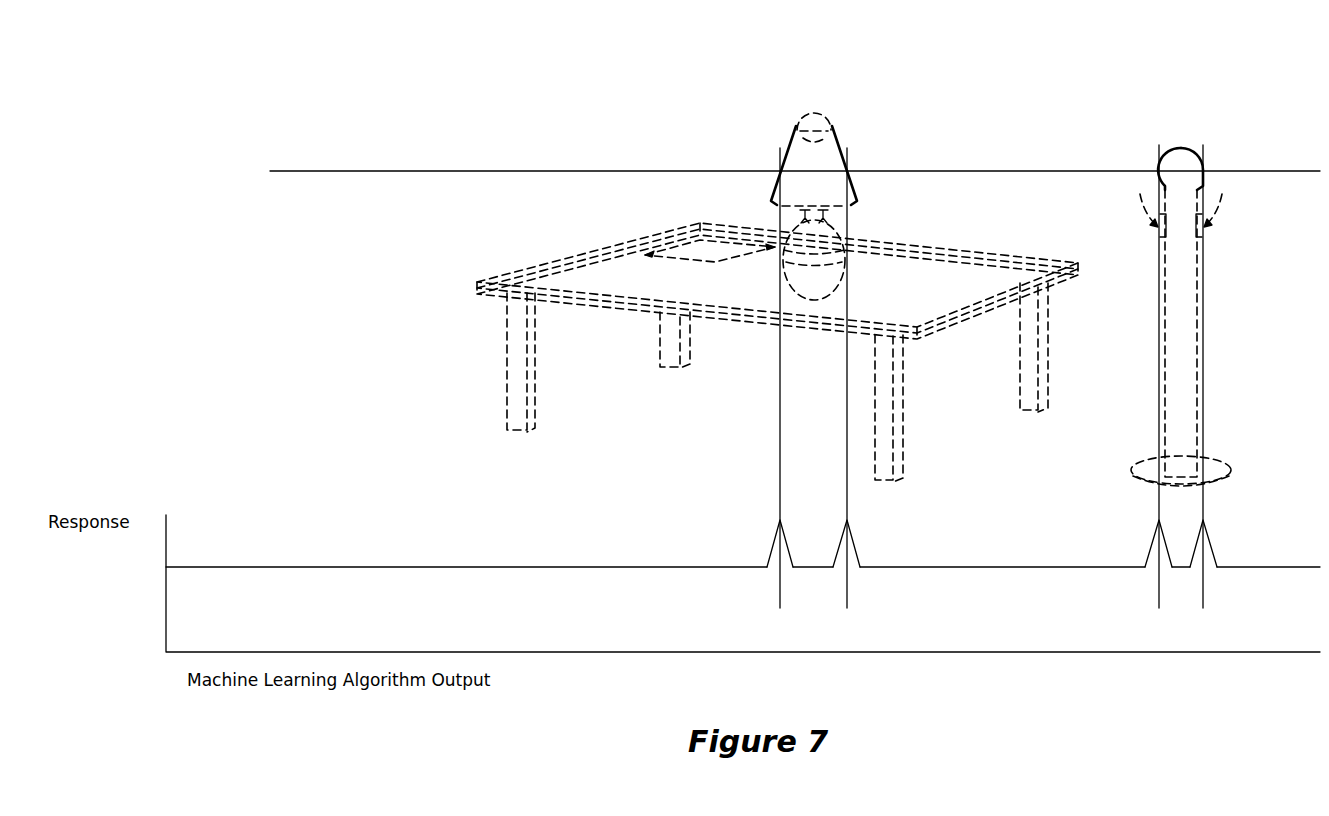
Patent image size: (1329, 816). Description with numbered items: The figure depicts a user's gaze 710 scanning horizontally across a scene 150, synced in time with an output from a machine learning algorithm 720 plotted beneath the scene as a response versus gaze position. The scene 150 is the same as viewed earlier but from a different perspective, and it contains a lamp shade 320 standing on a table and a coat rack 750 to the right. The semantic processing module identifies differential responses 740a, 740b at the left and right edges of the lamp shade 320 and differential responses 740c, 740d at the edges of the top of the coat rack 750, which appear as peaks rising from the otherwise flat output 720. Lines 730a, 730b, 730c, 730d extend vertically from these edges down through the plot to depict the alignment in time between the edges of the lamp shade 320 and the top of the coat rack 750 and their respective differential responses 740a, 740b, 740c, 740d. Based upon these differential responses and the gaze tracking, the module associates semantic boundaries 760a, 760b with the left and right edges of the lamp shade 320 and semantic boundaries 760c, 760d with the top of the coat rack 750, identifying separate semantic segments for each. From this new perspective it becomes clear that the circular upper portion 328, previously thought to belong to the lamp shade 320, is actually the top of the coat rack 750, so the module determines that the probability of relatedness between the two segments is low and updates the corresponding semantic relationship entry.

The scene 150 is at (1005, 85).
The lamp shade 320 is at (850, 124).
The circular upper portion 328 is at (1187, 149).
The user's gaze 710 is at (357, 171).
The output from a machine learning algorithm 720 is at (293, 567).
The line 730a is at (780, 433).
The line 730b is at (847, 433).
The line 730c is at (1159, 433).
The line 730d is at (1203, 433).
The differential response 740a is at (769, 548).
The differential response 740b is at (857, 548).
The differential response 740c is at (1149, 548).
The differential response 740d is at (1215, 548).
The coat rack 750 is at (1203, 296).
The semantic boundary 760a is at (775, 194).
The semantic boundary 760b is at (855, 194).
The semantic boundary 760c is at (1160, 164).
The semantic boundary 760d is at (1203, 163).